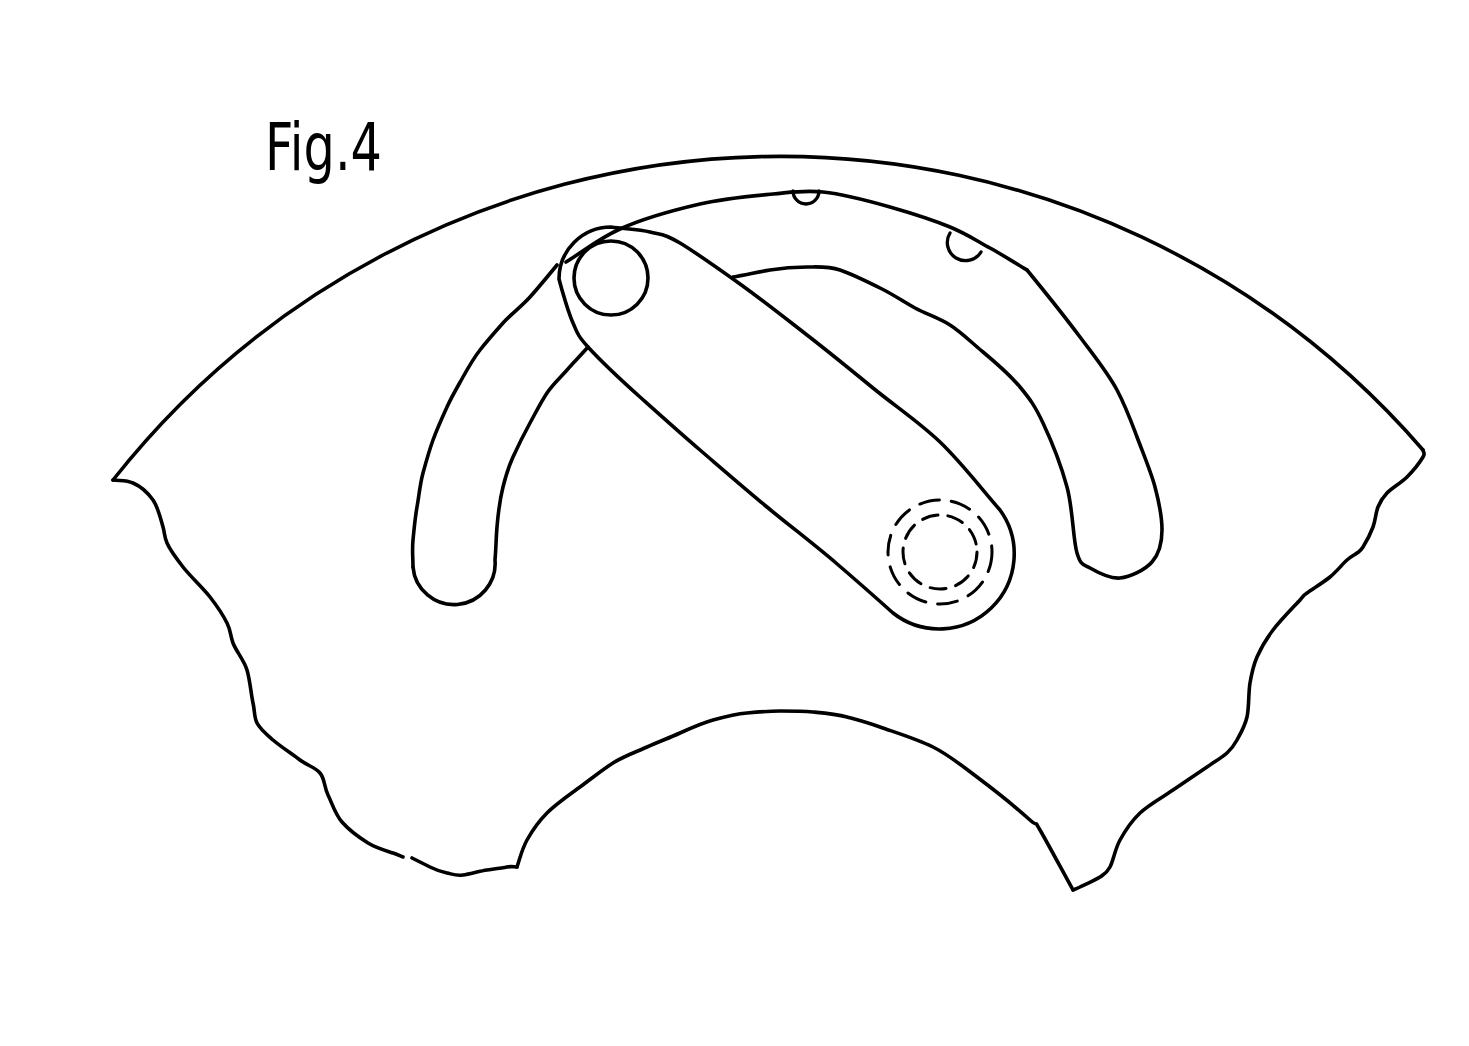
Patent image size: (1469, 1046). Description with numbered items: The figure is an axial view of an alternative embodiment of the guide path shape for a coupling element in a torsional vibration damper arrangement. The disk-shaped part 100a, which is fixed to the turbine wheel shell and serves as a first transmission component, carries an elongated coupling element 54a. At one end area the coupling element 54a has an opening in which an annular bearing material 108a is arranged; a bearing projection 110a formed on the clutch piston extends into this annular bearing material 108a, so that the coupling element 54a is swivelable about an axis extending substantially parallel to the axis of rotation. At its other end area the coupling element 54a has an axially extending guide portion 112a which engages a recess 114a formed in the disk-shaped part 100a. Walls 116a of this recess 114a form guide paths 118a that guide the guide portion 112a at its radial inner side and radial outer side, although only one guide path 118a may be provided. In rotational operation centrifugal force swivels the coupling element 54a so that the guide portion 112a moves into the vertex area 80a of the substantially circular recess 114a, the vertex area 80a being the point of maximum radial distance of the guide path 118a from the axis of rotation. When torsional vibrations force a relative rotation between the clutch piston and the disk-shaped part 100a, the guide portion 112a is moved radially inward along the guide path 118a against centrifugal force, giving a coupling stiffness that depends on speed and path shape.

The disk-shaped part 100a is at (1338, 548).
The vertex area 80a is at (780, 163).
The recess 114a is at (1100, 430).
The coupling element 54a is at (800, 485).
The guide portion 112a is at (608, 267).
The bearing projection 110a is at (940, 566).
The annular bearing material 108a is at (977, 572).
The guide path 118a is at (843, 263).
The wall 116a is at (966, 335).